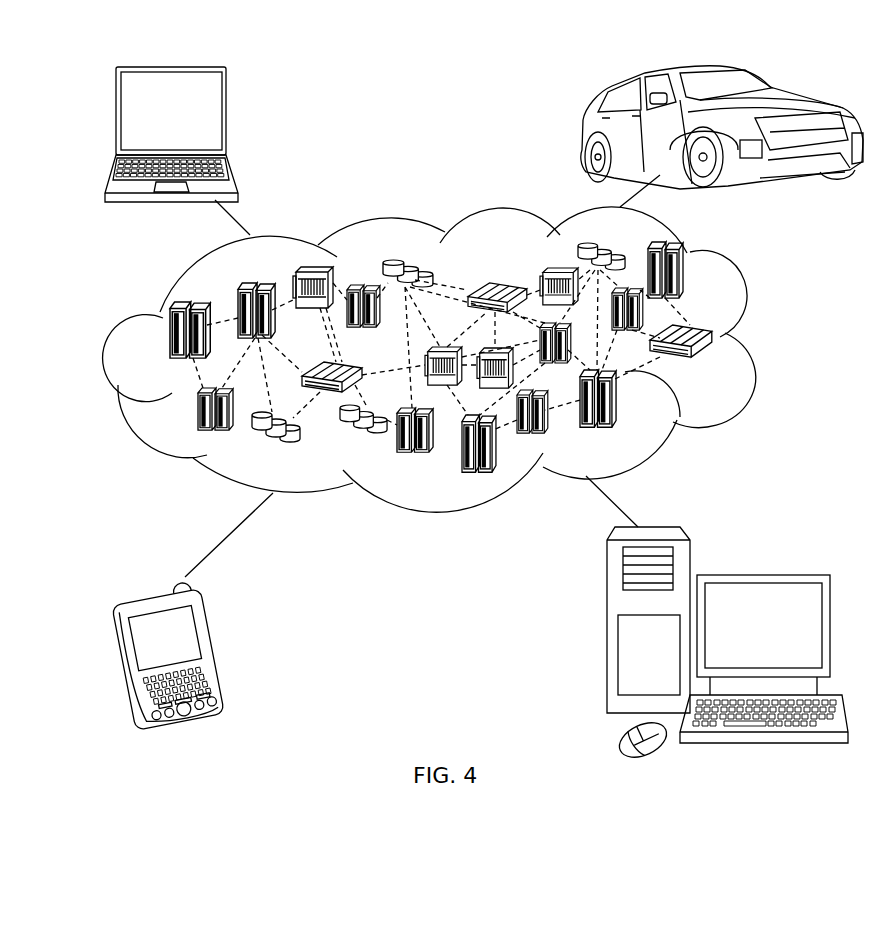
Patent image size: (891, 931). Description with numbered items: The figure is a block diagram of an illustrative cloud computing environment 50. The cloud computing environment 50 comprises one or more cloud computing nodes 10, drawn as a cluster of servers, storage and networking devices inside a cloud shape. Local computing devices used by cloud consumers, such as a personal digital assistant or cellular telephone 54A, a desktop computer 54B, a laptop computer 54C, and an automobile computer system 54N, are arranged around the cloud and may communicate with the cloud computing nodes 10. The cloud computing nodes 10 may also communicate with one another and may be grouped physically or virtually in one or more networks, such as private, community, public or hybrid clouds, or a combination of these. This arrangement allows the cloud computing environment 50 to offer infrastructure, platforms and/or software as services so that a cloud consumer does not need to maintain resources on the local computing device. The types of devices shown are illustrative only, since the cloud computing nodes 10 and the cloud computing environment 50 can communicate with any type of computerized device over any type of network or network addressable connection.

The cloud computing node 10 is at (713, 364).
The cloud computing environment 50 is at (761, 342).
The personal digital assistant or cellular telephone 54A is at (217, 651).
The desktop computer 54B is at (762, 575).
The laptop computer 54C is at (226, 117).
The automobile computer system 54N is at (581, 131).